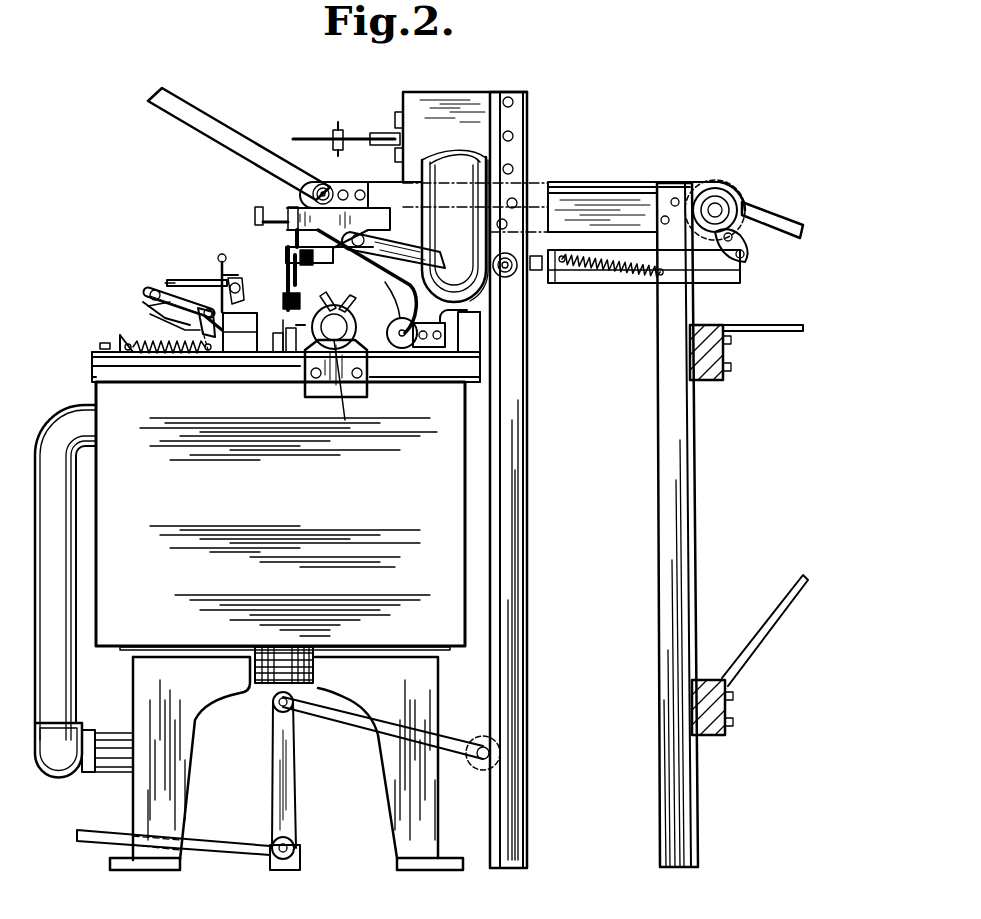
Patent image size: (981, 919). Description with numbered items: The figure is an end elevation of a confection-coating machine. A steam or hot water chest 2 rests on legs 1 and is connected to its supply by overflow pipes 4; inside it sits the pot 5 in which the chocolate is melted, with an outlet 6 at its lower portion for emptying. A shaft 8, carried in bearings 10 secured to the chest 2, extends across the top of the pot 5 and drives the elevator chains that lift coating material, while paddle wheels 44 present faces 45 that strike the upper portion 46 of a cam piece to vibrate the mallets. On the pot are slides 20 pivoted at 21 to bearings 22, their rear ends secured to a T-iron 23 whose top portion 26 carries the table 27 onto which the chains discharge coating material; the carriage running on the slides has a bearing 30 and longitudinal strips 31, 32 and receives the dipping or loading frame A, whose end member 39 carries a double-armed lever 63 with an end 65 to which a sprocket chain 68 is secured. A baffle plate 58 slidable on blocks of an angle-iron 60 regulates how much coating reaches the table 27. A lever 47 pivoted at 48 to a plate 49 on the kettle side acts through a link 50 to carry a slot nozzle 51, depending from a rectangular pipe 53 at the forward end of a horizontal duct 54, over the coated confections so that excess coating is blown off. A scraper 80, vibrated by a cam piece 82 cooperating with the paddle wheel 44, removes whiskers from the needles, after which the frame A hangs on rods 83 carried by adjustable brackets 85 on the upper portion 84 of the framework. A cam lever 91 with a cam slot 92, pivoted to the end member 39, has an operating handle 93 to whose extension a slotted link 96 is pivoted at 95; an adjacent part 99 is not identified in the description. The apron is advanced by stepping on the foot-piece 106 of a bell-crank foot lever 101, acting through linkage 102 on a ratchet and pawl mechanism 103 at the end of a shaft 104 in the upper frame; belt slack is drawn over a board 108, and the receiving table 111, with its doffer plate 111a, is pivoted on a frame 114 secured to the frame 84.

The legs 1 is at (136, 712).
The steam or hot water chest 2 is at (118, 644).
The overflow pipes 4 is at (76, 415).
The pot or container 5 is at (105, 386).
The outlet 6 is at (275, 683).
The shaft 8 is at (345, 410).
The bearings 10 is at (380, 372).
The slides 20 is at (265, 356).
The pivot 21 is at (122, 346).
The bearings 22 is at (100, 350).
The T-iron 23 is at (284, 354).
The top portion of the T-iron 26 is at (268, 346).
The table 27 is at (288, 332).
The bearing 30 is at (222, 363).
The longitudinal strip 31 is at (207, 352).
The longitudinal strip 32 is at (156, 352).
The end member 39 is at (182, 278).
The paddle wheels 44 is at (337, 302).
The faces 45 is at (350, 290).
The upper portion of cam piece 46 is at (305, 376).
The lever 47 is at (228, 142).
The pivot 48 is at (404, 348).
The plate 49 is at (437, 350).
The link 50 is at (388, 238).
The transverse elongated nozzle 51 is at (283, 295).
The rectangular pipe 53 is at (288, 250).
The horizontal duct 54 is at (312, 256).
The baffle plate 58 is at (456, 318).
The angle-iron 60 is at (462, 352).
The double-armed lever 63 is at (150, 302).
The lever end 65 is at (155, 316).
The sprocket chain 68 is at (250, 292).
The scraper 80 is at (258, 214).
The cam piece 82 is at (292, 238).
The rods 83 is at (318, 136).
The upper portion of the framework 84 is at (500, 94).
The brackets 85 is at (390, 135).
The cam lever 91 is at (228, 326).
The cam slot 92 is at (246, 346).
The operating handle 93 is at (222, 254).
The pivot 95 is at (218, 282).
The slotted link 96 is at (148, 290).
The lever 99 is at (155, 290).
The bell-crank foot lever 101 is at (275, 803).
The linkage 102 is at (527, 292).
The ratchet and pawl mechanism 103 is at (748, 244).
The shaft 104 is at (726, 192).
The foot-piece 106 is at (98, 830).
The board 108 is at (640, 238).
The receiving table 111 is at (792, 230).
The doffer plate 111a is at (762, 206).
The frame 114 is at (760, 325).
The dipping or loading frame A is at (180, 278).